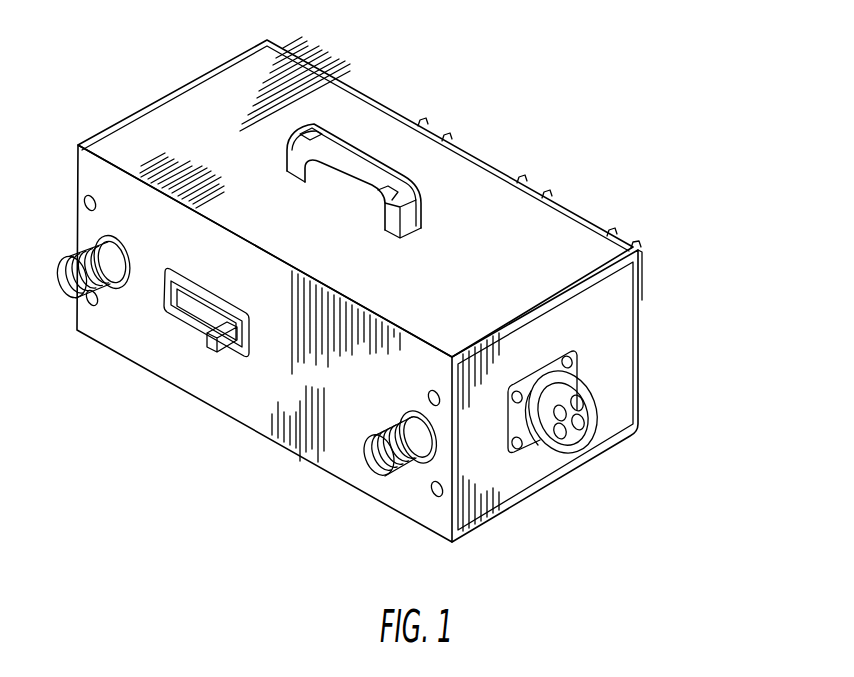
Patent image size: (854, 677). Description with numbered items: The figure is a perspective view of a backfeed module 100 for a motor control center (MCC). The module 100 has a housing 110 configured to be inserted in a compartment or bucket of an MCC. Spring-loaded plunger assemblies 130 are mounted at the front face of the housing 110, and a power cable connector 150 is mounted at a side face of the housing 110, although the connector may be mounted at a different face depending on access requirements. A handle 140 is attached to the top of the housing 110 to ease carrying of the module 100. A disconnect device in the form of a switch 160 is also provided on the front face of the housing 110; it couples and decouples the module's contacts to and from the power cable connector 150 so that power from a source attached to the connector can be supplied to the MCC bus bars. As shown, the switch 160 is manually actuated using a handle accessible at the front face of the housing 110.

The backfeed module 100 is at (648, 185).
The housing 110 is at (623, 317).
The spring-loaded plunger assemblies 130 is at (375, 455).
The handle 140 is at (355, 155).
The power cable connector 150 is at (592, 413).
The switch 160 is at (176, 318).